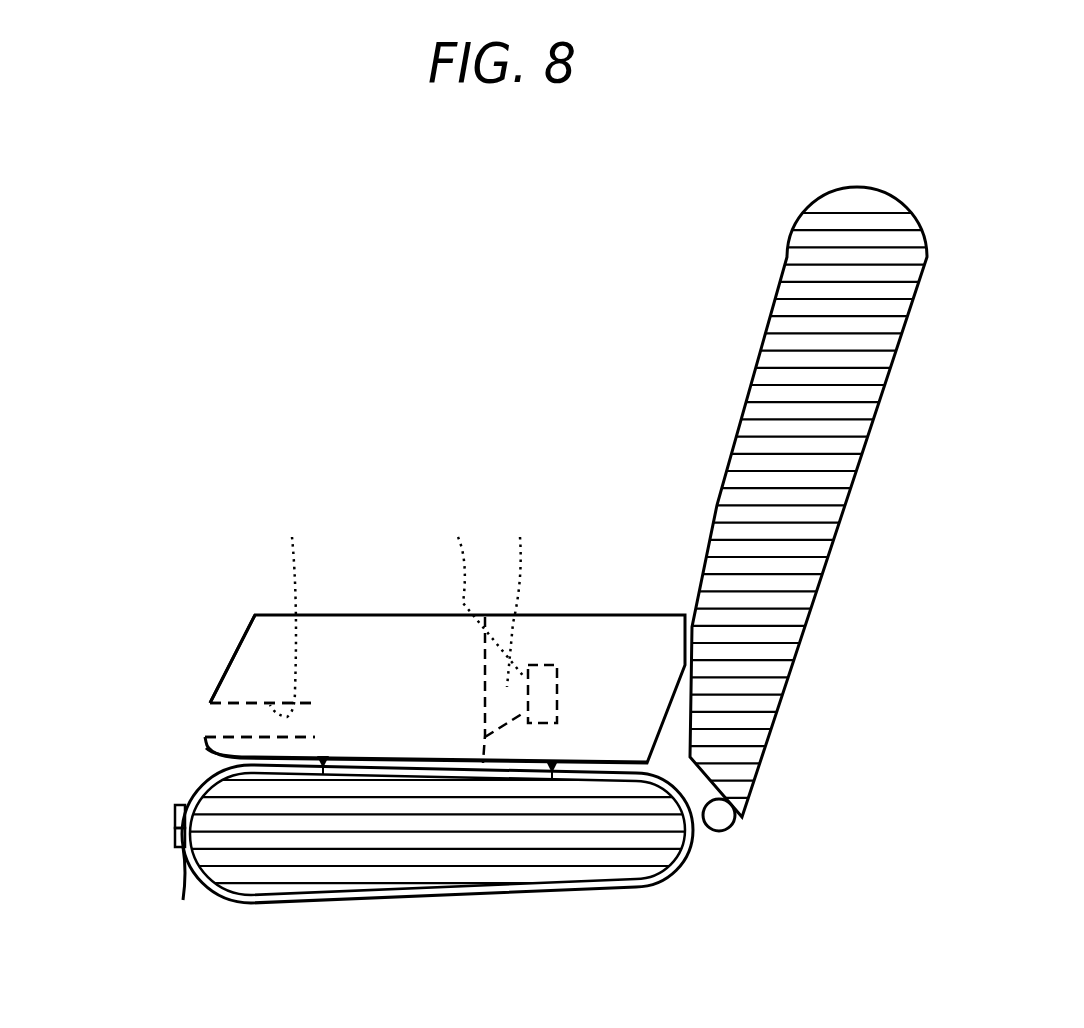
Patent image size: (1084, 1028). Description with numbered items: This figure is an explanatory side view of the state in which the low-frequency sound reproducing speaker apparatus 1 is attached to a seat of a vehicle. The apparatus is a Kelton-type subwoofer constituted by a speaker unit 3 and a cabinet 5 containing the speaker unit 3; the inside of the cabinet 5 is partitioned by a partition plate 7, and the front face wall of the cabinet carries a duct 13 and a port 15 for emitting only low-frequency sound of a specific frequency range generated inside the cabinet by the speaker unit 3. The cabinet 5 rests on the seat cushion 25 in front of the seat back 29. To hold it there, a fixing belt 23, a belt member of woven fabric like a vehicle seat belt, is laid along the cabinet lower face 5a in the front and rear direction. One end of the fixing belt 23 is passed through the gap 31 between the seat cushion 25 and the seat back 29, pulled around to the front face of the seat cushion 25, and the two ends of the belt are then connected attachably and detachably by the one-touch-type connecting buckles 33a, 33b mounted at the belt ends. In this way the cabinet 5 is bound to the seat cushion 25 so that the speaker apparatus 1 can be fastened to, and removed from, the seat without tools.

The low-frequency sound reproducing speaker apparatus 1 is at (378, 603).
The speaker unit 3 is at (532, 614).
The cabinet 5 is at (240, 630).
The cabinet lower face 5a is at (430, 760).
The partition plate 7 is at (486, 634).
The duct 13 is at (292, 611).
The port 15 is at (210, 720).
The fixing belt 23 is at (590, 887).
The seat cushion 25 is at (478, 855).
The seat back 29 is at (860, 478).
The gap 31 is at (708, 843).
The connecting buckle 33a is at (175, 815).
The connecting buckle 33b is at (175, 833).